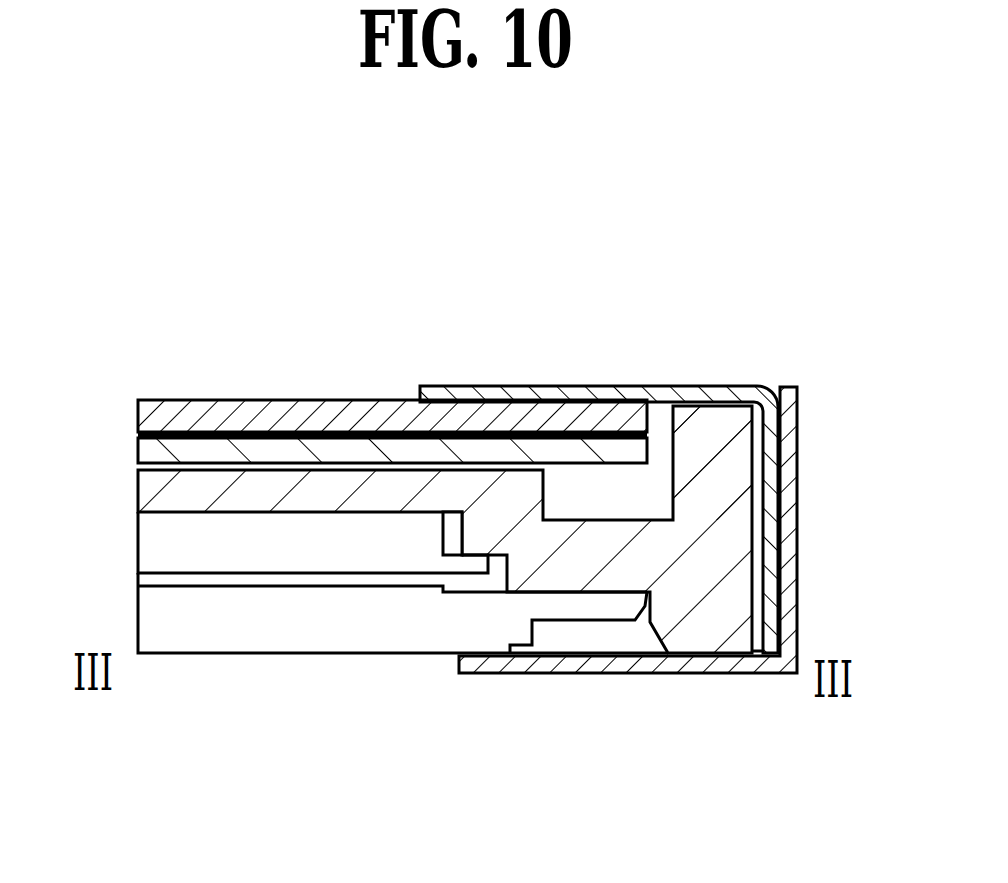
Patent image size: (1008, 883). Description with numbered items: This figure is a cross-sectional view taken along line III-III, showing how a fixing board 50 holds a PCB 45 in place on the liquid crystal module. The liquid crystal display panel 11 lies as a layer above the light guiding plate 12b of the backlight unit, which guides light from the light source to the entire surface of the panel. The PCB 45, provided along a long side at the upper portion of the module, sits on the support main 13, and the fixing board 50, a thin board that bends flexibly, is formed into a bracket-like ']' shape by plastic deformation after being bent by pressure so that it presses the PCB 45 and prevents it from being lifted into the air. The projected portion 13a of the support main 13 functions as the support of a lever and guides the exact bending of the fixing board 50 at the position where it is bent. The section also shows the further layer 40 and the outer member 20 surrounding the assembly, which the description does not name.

The liquid crystal display panel 11 is at (222, 623).
The light guiding plate 12b is at (160, 547).
The support main 13 is at (703, 618).
The projected portion 13a is at (703, 418).
The bottom chassis 20 is at (791, 622).
The optical sheet 40 is at (275, 436).
The PCB 45 is at (181, 436).
The fixing board 50 is at (786, 540).